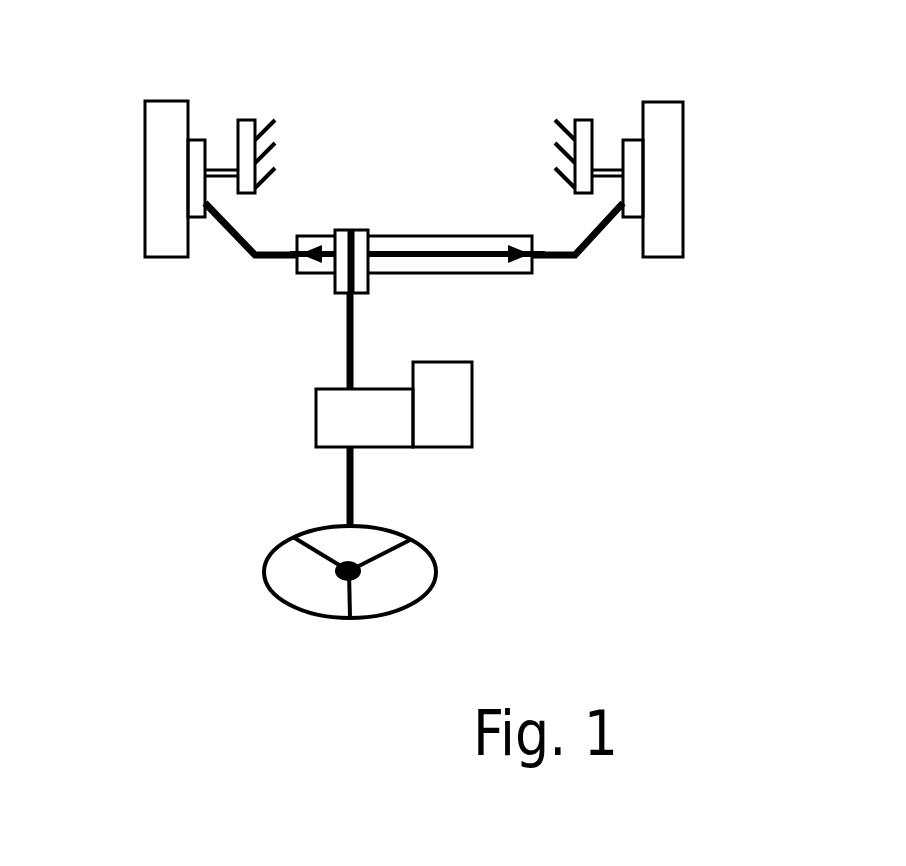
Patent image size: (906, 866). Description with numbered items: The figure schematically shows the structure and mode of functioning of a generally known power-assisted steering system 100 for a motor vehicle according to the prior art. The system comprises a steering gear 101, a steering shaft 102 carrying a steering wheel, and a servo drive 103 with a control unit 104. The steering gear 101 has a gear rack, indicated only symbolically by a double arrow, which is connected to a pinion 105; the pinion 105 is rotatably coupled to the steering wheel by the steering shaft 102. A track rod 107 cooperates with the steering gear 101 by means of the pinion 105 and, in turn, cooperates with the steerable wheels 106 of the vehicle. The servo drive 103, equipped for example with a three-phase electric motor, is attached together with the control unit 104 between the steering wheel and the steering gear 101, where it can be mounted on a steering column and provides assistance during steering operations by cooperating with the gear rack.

The power-assisted steering system 100 is at (535, 360).
The steering gear 101 is at (437, 235).
The steering shaft 102 is at (347, 348).
The servo drive 103 is at (375, 438).
The control unit 104 is at (450, 413).
The pinion 105 is at (362, 230).
The steerable wheels 106 is at (157, 235).
The track rod 107 is at (557, 258).